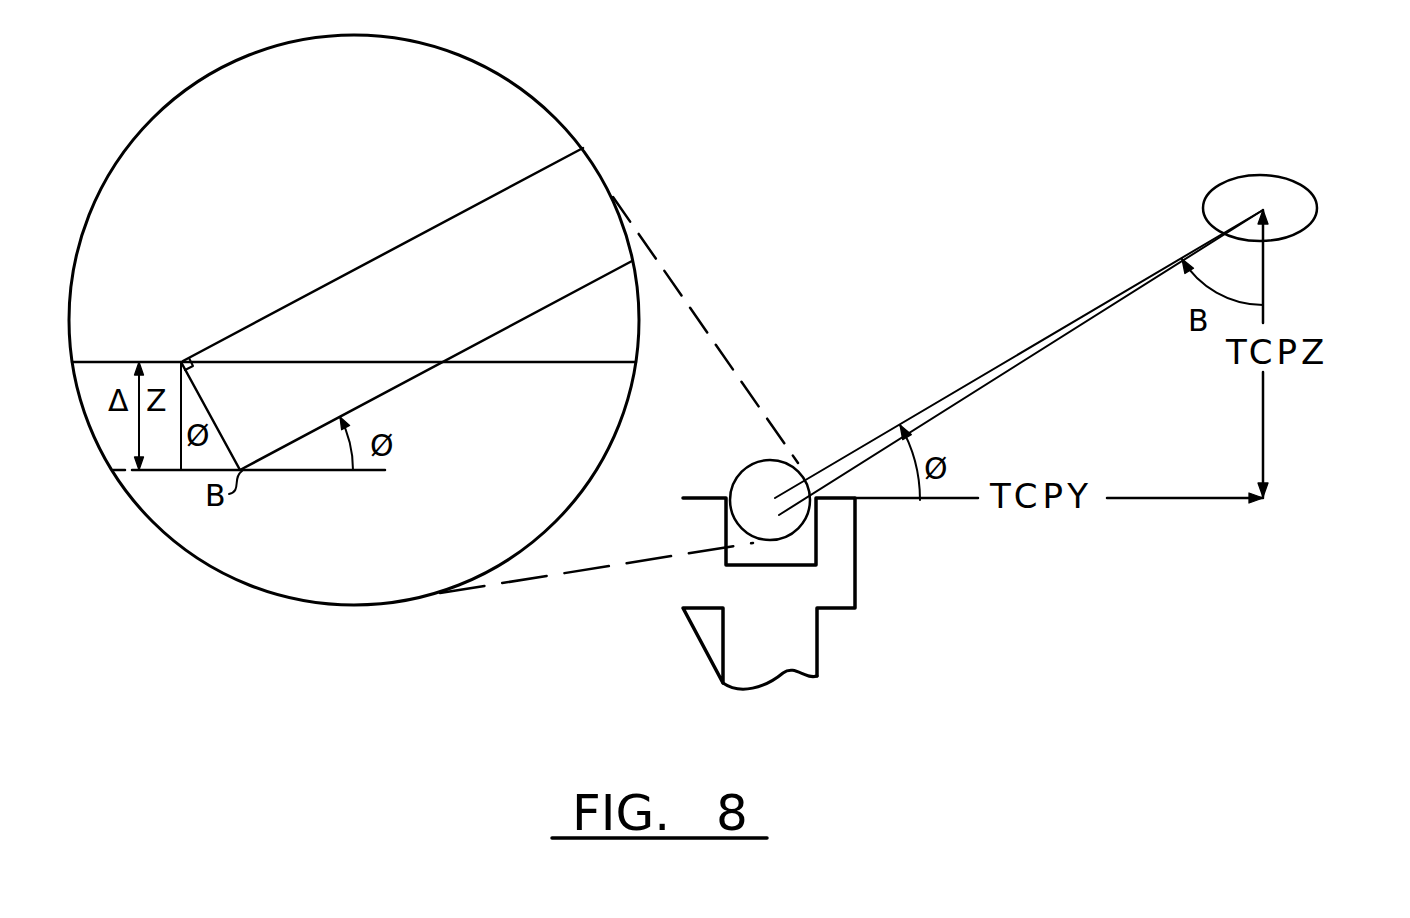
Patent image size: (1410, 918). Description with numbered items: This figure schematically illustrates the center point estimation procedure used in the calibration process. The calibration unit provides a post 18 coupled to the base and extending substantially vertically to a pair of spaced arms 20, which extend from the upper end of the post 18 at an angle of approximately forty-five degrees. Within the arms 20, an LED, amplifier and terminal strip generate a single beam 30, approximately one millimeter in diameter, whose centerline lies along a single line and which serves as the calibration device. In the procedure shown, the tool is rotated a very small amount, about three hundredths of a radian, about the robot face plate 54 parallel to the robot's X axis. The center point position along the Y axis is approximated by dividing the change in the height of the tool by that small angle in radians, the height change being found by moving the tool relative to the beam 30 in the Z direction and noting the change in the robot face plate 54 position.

The post 18 is at (802, 655).
The arms 20 is at (695, 582).
The beam 30 is at (748, 497).
The robot face plate 54 is at (1300, 184).